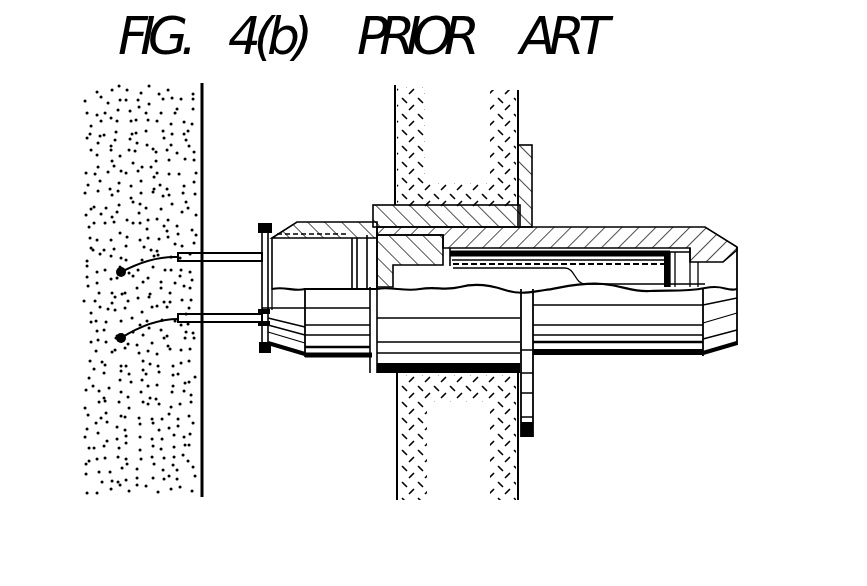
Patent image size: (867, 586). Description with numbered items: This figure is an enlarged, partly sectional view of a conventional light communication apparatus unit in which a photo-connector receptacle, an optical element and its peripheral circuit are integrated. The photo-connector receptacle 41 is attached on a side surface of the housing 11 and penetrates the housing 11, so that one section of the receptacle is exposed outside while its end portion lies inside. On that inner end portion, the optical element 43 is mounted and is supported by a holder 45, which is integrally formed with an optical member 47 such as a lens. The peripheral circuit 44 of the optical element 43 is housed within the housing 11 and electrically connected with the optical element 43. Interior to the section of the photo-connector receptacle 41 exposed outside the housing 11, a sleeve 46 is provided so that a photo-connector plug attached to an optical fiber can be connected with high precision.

The housing 11 is at (482, 130).
The photo-connector receptacle 41 is at (612, 327).
The optical element 43 is at (318, 261).
The peripheral circuit 44 is at (178, 137).
The holder 45 is at (343, 333).
The sleeve 46 is at (653, 255).
The optical member 47 is at (542, 276).